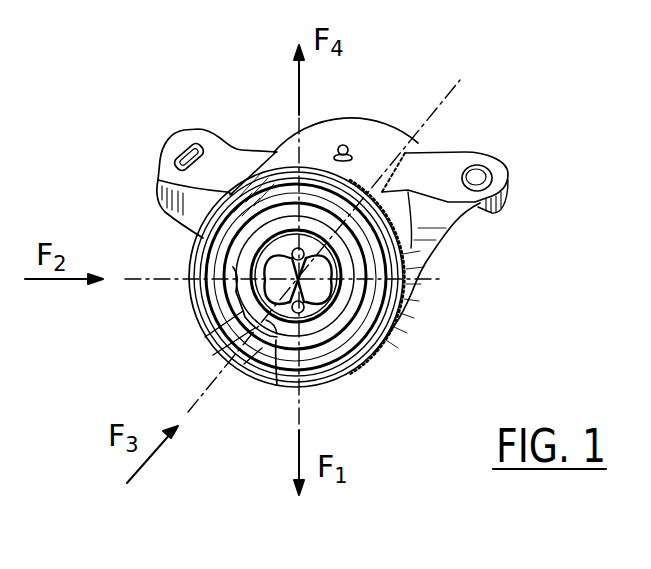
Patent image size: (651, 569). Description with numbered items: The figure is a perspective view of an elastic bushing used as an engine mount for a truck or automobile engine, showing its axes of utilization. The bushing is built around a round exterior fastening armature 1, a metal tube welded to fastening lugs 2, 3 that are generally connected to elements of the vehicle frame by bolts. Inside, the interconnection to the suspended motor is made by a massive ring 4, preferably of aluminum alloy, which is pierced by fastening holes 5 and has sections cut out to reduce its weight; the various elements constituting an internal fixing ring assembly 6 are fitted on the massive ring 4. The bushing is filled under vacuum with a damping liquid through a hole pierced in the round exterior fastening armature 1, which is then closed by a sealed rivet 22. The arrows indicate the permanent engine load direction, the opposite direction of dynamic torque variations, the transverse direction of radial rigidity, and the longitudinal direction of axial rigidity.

The round exterior fastening armature 1 is at (387, 340).
The fastening lug 2 is at (162, 168).
The fastening lug 3 is at (445, 168).
The massive ring 4 is at (277, 385).
The fastening holes 5 is at (304, 307).
The internal fixing ring assembly 6 is at (220, 326).
The sealed rivet 22 is at (345, 146).